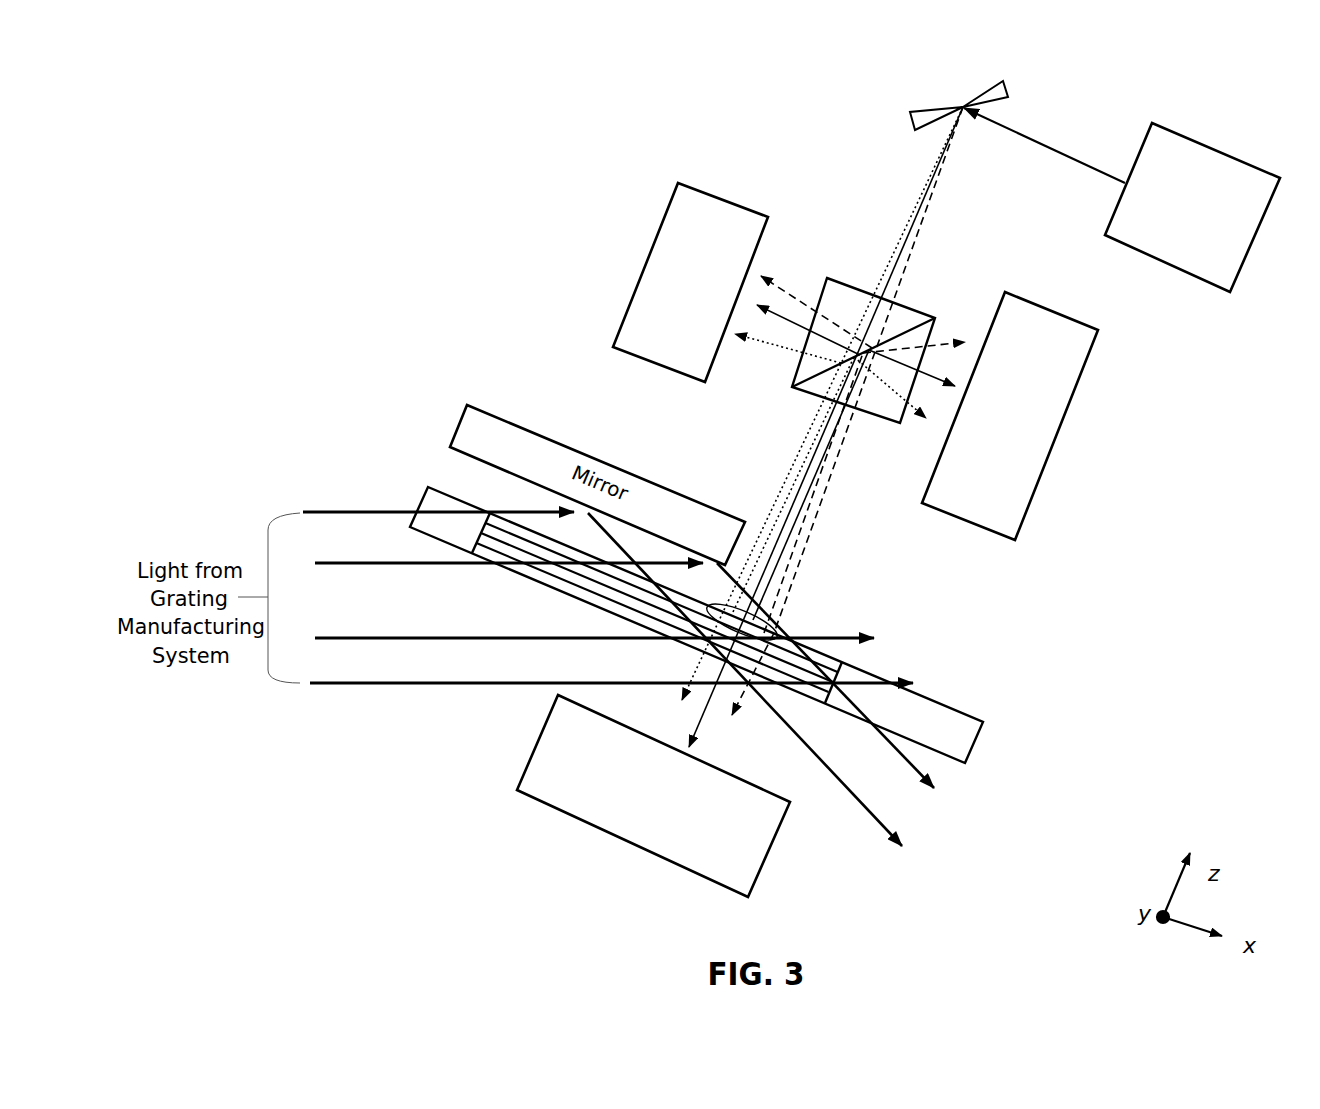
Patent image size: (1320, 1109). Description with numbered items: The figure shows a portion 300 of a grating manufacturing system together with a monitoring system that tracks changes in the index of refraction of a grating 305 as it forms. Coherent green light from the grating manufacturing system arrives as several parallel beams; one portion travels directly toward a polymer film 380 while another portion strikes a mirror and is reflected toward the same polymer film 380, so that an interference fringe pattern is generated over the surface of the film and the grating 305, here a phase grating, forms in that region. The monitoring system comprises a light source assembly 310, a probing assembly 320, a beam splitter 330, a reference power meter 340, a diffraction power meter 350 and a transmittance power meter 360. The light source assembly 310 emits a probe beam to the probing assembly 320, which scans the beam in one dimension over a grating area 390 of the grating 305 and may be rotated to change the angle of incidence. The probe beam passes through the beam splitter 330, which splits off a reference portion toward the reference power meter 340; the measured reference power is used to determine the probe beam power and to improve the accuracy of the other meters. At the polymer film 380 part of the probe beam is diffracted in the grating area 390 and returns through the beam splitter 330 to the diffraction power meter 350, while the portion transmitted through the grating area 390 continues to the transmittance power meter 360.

The portion of a manufacturing system 300 is at (1266, 80).
The grating 305 is at (418, 510).
The light source assembly 310 is at (1122, 200).
The probing assembly 320 is at (912, 121).
The beam splitter 330 is at (934, 323).
The reference power meter 340 is at (690, 282).
The diffraction power meter 350 is at (1010, 416).
The transmittance power meter 360 is at (653, 796).
The polymer film 380 is at (950, 733).
The grating area 390 is at (785, 627).